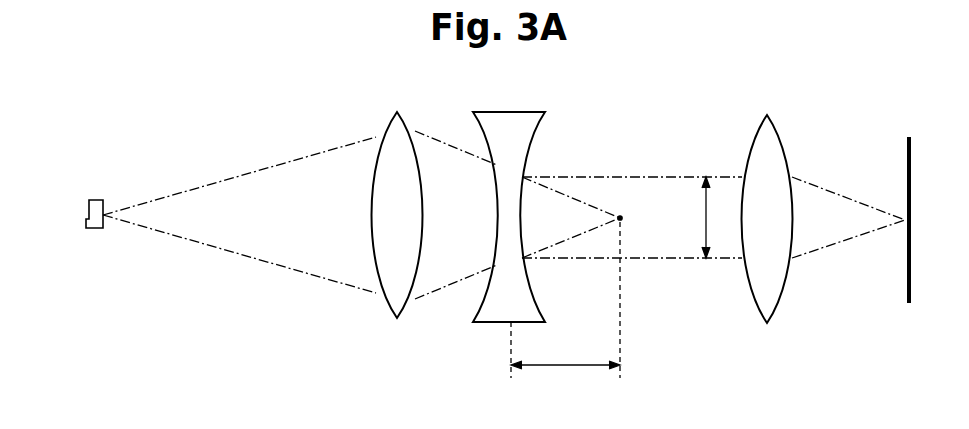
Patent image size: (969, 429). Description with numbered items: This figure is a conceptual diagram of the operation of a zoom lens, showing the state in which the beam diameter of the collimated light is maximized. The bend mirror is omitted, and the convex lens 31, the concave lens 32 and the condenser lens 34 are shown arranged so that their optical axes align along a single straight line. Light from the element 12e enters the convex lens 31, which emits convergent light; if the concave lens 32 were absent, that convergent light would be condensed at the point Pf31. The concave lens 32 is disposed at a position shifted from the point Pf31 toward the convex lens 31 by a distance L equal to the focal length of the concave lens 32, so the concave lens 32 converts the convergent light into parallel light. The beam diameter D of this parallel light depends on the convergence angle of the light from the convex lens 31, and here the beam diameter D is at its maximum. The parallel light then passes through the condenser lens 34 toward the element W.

The light source 12e is at (96, 200).
The convex lens 31 is at (397, 112).
The concave lens 32 is at (514, 112).
The condenser lens 34 is at (768, 115).
The point Pf31 is at (620, 218).
The beam diameter D is at (715, 217).
The distance L is at (565, 300).
The workpiece W is at (909, 137).